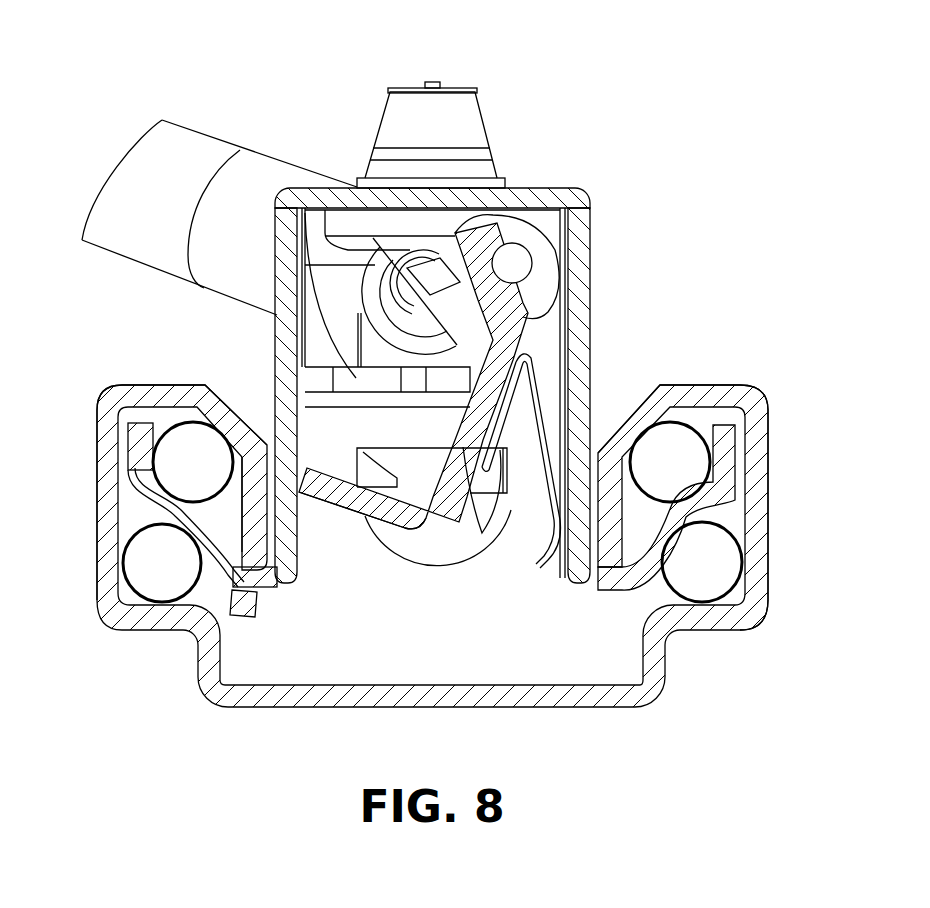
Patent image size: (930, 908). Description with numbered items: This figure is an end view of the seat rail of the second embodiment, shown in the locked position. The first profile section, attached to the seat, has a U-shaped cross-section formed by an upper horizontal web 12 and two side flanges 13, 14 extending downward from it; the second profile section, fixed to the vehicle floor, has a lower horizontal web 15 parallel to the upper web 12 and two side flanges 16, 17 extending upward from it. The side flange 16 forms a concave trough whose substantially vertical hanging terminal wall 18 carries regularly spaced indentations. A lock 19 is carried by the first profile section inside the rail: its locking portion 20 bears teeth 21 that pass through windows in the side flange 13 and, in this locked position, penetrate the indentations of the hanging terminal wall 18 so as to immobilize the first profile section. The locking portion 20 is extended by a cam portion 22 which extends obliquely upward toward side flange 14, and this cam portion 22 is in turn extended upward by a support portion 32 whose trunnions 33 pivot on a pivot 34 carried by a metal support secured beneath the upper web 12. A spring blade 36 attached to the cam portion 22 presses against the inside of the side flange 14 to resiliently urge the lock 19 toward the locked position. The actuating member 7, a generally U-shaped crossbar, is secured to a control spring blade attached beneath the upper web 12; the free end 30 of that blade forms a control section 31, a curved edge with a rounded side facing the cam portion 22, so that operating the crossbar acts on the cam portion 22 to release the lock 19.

The actuating member 7 is at (190, 138).
The upper horizontal web 12 is at (515, 197).
The side flange 13 is at (278, 360).
The side flange 14 is at (580, 330).
The lower horizontal web 15 is at (508, 693).
The side flange 16 is at (107, 530).
The side flange 17 is at (755, 482).
The hanging terminal wall 18 is at (255, 528).
The lock 19 is at (431, 546).
The locking portion 20 is at (333, 493).
The teeth 21 is at (270, 470).
The cam portion 22 is at (486, 472).
The free end 30 is at (297, 330).
The control section 31 is at (356, 376).
The support portion 32 is at (562, 312).
The trunnions 33 is at (547, 255).
The pivot 34 is at (512, 263).
The spring blade 36 is at (552, 370).